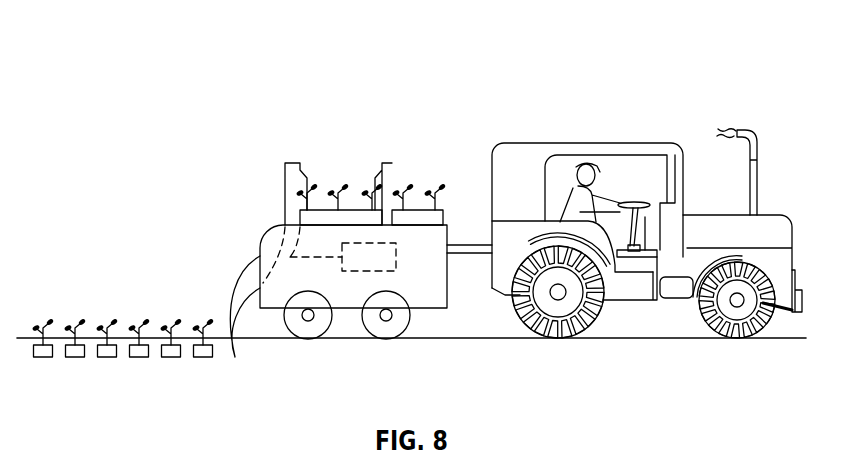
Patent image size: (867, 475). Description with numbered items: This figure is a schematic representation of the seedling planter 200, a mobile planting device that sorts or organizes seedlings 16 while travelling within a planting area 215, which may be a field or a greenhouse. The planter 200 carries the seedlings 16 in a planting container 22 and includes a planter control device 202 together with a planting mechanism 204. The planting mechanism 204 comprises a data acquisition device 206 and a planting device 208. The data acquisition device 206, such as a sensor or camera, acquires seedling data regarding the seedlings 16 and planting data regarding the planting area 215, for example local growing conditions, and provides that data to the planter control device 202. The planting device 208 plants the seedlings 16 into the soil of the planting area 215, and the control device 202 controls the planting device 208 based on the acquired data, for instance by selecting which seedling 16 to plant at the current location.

The seedling planter 200 is at (133, 31).
The planting mechanism 204 is at (250, 203).
The data acquisition device 206 is at (383, 182).
The planting container 22 is at (443, 217).
The seedlings 16 is at (78, 322).
The planting area 215 is at (111, 260).
The planting device 208 is at (243, 275).
The planter control device 202 is at (396, 253).